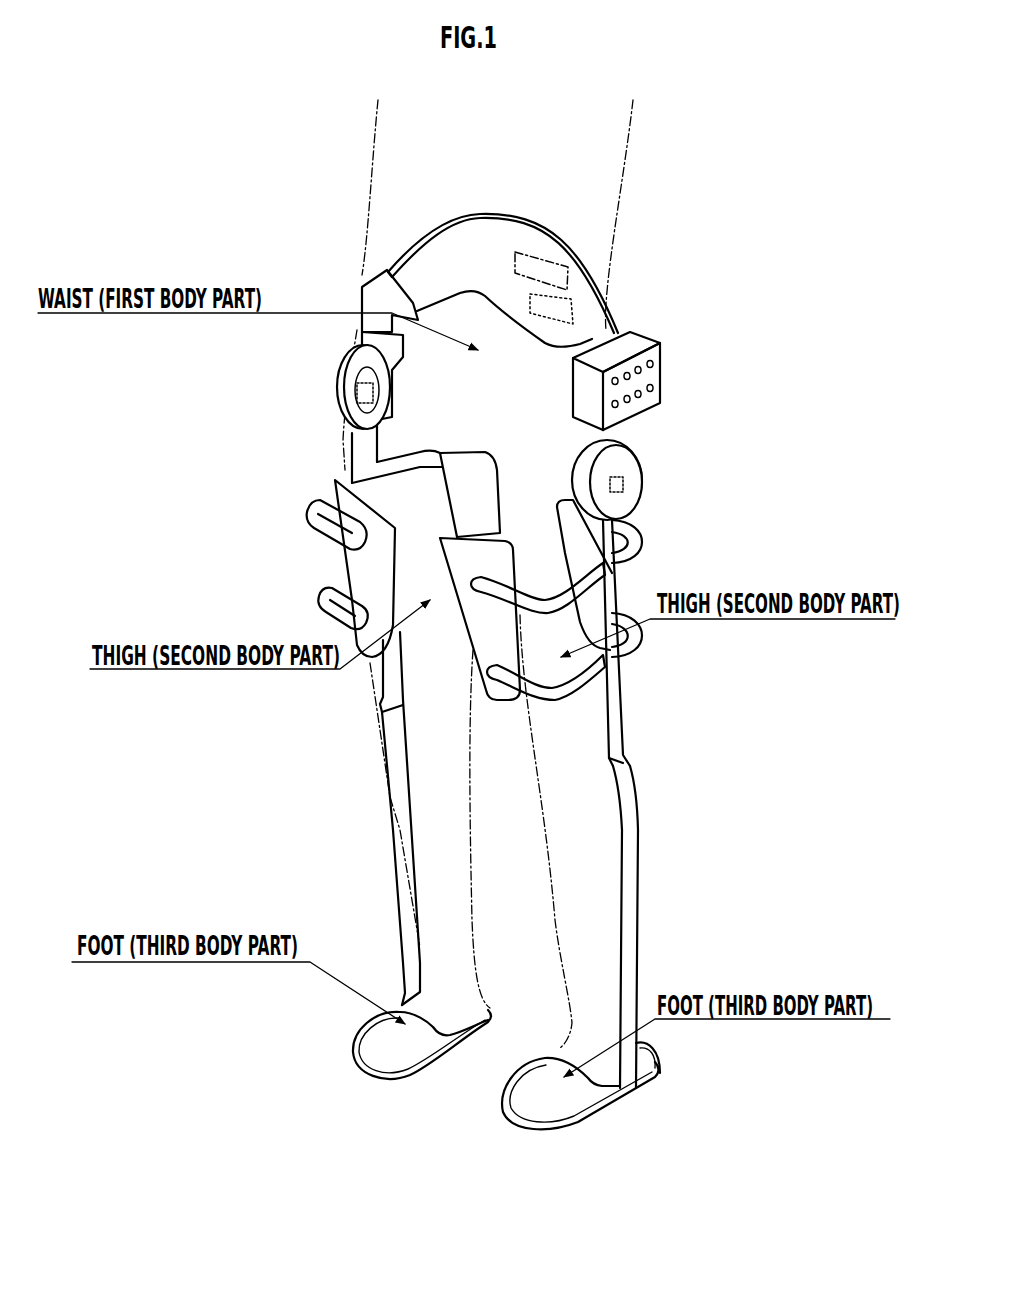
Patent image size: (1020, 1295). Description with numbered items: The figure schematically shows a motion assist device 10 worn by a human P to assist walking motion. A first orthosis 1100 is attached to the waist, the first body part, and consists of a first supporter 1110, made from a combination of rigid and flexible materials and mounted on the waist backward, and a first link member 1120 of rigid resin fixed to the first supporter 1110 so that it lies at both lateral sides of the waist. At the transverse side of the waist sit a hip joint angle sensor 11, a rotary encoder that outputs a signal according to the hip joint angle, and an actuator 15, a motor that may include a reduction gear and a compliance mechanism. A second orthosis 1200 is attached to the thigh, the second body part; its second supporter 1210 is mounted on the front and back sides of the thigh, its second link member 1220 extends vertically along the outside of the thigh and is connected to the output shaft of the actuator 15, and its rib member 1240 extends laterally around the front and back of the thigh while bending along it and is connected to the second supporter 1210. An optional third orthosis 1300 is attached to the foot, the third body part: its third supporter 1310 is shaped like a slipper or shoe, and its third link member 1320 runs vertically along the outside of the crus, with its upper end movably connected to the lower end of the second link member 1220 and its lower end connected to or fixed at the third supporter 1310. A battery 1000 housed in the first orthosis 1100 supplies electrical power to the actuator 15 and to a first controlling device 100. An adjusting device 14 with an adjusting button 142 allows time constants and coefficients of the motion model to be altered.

The human P is at (360, 128).
The motion assist device 10 is at (701, 247).
The first controlling device 100 is at (568, 262).
The battery 1000 is at (582, 300).
The first orthosis 1100 is at (523, 244).
The first supporter 1110 is at (485, 233).
The first link member 1120 is at (392, 280).
The adjusting device 14 is at (659, 360).
The adjusting button 142 is at (651, 362).
The actuator 15 is at (477, 426).
The hip joint angle sensor 11 is at (360, 380).
The second orthosis 1200 is at (461, 579).
The second supporter 1210 is at (477, 466).
The second link member 1220 is at (606, 600).
The rib member 1240 is at (318, 532).
The third orthosis 1300 is at (511, 889).
The third supporter 1310 is at (372, 1028).
The third link member 1320 is at (405, 885).